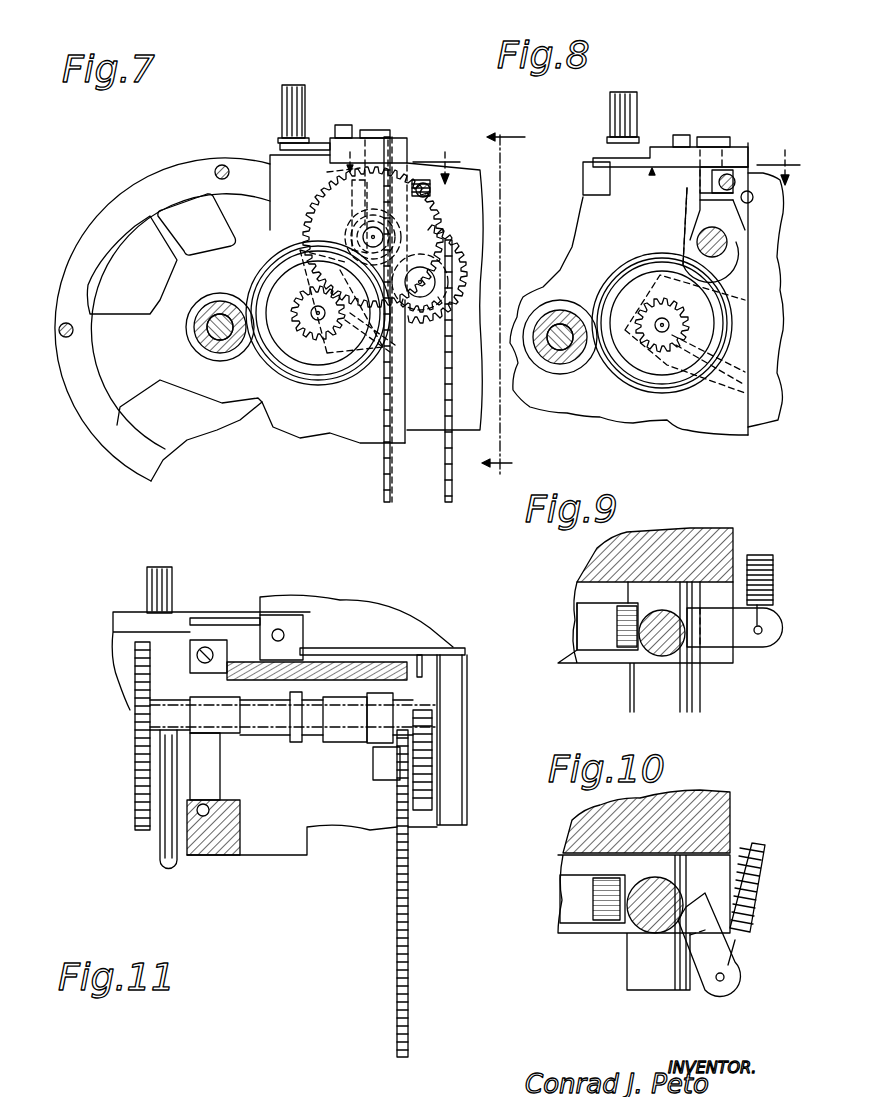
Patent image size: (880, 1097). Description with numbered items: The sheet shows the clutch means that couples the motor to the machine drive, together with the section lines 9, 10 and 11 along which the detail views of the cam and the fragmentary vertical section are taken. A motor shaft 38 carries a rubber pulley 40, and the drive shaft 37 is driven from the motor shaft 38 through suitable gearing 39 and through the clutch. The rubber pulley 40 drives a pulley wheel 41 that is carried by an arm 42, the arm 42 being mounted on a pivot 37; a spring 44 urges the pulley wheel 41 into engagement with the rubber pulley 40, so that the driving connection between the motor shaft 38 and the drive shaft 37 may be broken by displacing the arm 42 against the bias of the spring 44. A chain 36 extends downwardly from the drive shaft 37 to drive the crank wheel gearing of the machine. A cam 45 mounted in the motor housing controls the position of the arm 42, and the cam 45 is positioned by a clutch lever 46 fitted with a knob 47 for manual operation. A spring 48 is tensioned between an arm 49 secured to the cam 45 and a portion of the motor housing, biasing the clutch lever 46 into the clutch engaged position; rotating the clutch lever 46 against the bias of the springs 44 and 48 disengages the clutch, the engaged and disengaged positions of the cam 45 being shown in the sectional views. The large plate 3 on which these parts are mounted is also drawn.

In FIG. 7, the disc 3 is at (110, 210).
In FIG. 7, the section line 9— 9 is at (400, 159).
In FIG. 8, the section line 10— 10 is at (709, 163).
In FIG. 7, the section line 11— 11 is at (501, 303).
In FIG. 7, the chain 36 is at (384, 481).
In FIG. 11, the chain 36 is at (397, 918).
In FIG. 7, the drive shaft 37 is at (370, 235).
In FIG. 8, the drive shaft 37 is at (727, 244).
In FIG. 11, the drive shaft 37 is at (315, 742).
In FIG. 7, the motor shaft 38 is at (210, 330).
In FIG. 8, the motor shaft 38 is at (562, 352).
In FIG. 7, the gearing 39 is at (282, 265).
In FIG. 11, the gearing 39 is at (135, 768).
In FIG. 7, the rubber pulley 40 is at (230, 362).
In FIG. 8, the rubber pulley 40 is at (555, 301).
In FIG. 7, the pulley wheel 41 is at (322, 375).
In FIG. 8, the pulley wheel 41 is at (640, 270).
In FIG. 11, the pulley wheel 41 is at (160, 845).
In FIG. 7, the arm 42 is at (305, 228).
In FIG. 8, the arm 42 is at (685, 212).
In FIG. 9, the arm 42 is at (592, 622).
In FIG. 10, the arm 42 is at (572, 902).
In FIG. 11, the arm 42 is at (205, 755).
In FIG. 7, the spring 44 is at (358, 375).
In FIG. 8, the spring 44 is at (683, 392).
In FIG. 11, the spring 44 is at (210, 808).
In FIG. 7, the cam 45 is at (326, 176).
In FIG. 8, the cam 45 is at (700, 180).
In FIG. 9, the cam 45 is at (652, 655).
In FIG. 10, the cam 45 is at (640, 920).
In FIG. 11, the cam 45 is at (193, 645).
In FIG. 7, the clutch lever 46 is at (320, 143).
In FIG. 8, the clutch lever 46 is at (640, 148).
In FIG. 11, the clutch lever 46 is at (232, 615).
In FIG. 7, the knob 47 is at (282, 97).
In FIG. 8, the knob 47 is at (637, 100).
In FIG. 11, the knob 47 is at (147, 585).
In FIG. 7, the spring 48 is at (432, 192).
In FIG. 8, the spring 48 is at (753, 200).
In FIG. 9, the spring 48 is at (773, 565).
In FIG. 10, the spring 48 is at (752, 888).
In FIG. 11, the spring 48 is at (340, 662).
In FIG. 7, the arm 49 is at (416, 194).
In FIG. 8, the arm 49 is at (740, 200).
In FIG. 9, the arm 49 is at (762, 655).
In FIG. 10, the arm 49 is at (735, 992).
In FIG. 11, the arm 49 is at (198, 665).